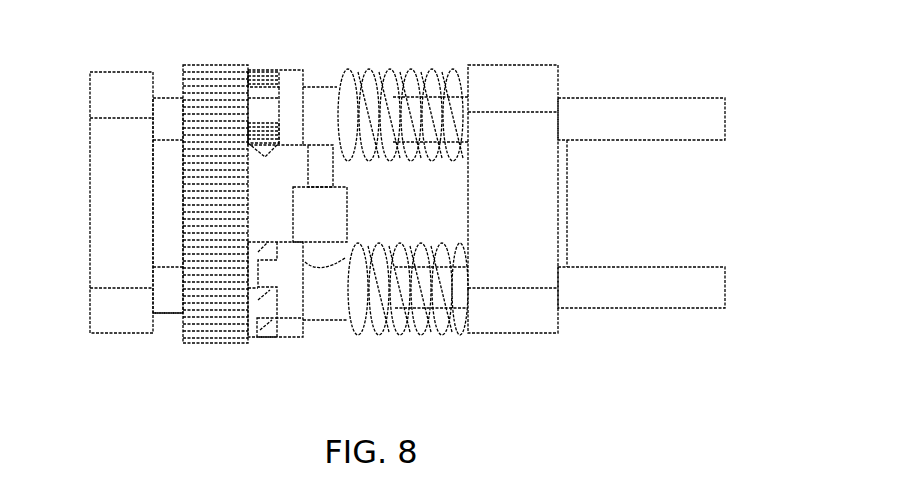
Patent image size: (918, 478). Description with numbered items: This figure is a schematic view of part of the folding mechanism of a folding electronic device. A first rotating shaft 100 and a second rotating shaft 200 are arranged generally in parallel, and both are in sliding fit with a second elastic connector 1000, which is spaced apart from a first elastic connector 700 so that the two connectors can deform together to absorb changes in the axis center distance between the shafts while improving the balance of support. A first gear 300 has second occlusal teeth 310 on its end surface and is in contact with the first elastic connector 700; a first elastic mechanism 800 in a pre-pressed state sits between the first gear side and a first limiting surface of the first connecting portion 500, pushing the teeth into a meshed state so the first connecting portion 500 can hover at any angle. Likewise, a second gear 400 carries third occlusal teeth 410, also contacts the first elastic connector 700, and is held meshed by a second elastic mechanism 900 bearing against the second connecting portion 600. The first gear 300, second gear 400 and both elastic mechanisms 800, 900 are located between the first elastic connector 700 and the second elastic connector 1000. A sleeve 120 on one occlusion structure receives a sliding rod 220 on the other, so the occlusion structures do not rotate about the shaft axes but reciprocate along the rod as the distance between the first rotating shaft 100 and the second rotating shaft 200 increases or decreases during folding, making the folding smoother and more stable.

The first rotating shaft 100 is at (178, 120).
The sleeve 120 is at (332, 302).
The second rotating shaft 200 is at (169, 291).
The sliding rod 220 is at (320, 172).
The first gear 300 is at (227, 145).
The second occlusal teeth 310 is at (277, 150).
The second gear 400 is at (230, 291).
The third occlusal teeth 410 is at (281, 291).
The first connecting portion 500 is at (666, 115).
The second connecting portion 600 is at (656, 293).
The first elastic connector 700 is at (123, 145).
The first elastic mechanism 800 is at (425, 143).
The second elastic mechanism 900 is at (396, 291).
The second elastic connector 1000 is at (525, 145).